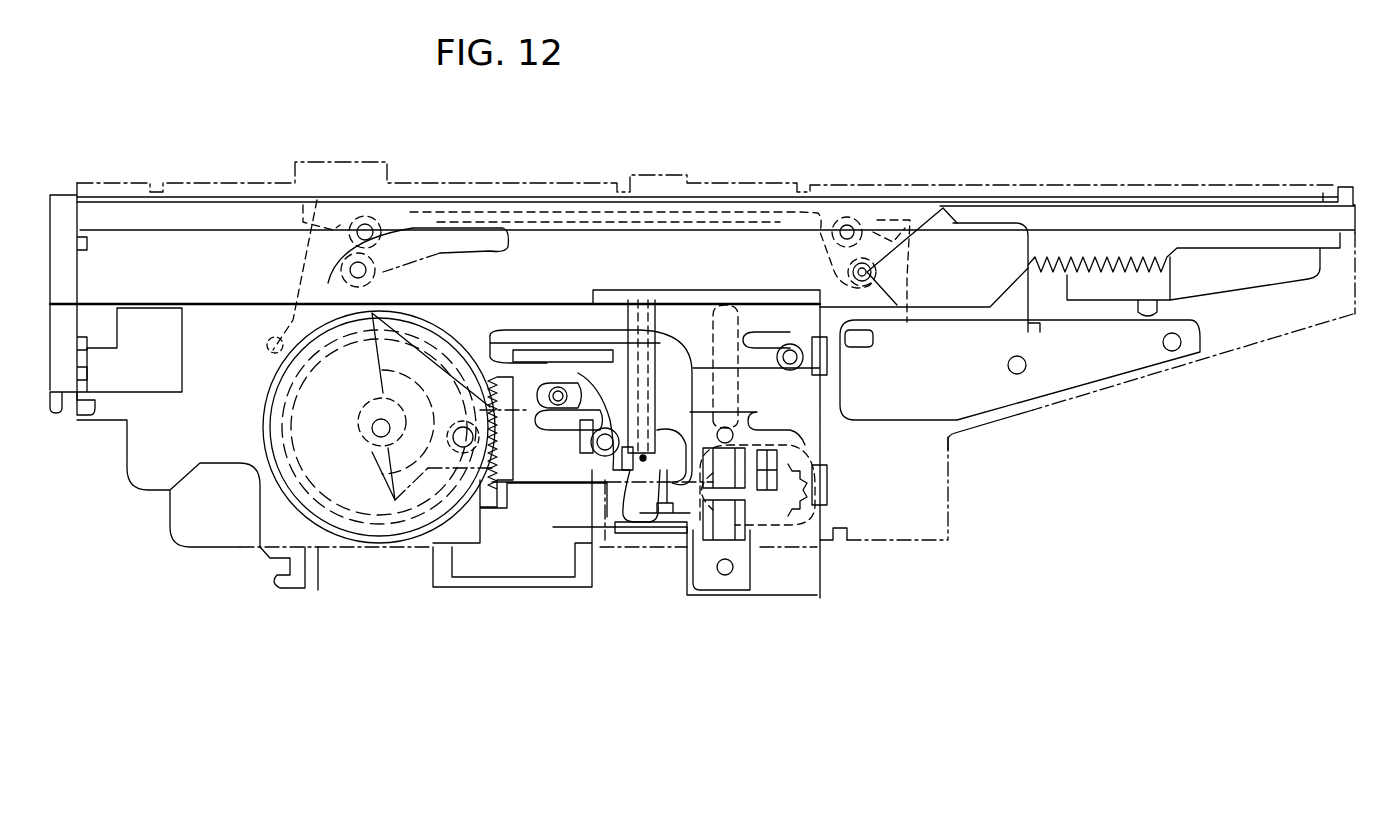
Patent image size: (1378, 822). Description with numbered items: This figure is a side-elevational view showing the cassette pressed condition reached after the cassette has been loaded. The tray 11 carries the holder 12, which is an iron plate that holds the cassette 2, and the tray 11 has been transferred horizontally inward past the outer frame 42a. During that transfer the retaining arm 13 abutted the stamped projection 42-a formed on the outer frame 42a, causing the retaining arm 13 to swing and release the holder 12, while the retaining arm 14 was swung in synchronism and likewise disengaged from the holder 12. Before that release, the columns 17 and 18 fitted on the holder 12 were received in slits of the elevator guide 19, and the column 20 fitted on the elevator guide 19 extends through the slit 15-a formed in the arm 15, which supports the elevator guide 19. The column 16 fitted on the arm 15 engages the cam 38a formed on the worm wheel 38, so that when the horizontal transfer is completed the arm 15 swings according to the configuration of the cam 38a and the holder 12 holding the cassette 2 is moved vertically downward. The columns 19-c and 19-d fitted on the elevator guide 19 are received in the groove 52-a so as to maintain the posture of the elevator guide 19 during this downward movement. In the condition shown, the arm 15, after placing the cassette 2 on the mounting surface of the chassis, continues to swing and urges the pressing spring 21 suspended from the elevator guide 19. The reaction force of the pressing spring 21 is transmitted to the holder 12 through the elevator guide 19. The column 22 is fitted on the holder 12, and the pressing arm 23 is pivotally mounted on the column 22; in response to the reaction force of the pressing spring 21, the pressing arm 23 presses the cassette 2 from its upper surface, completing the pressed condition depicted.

The tray 11 is at (1094, 188).
The retaining arm 14 is at (313, 267).
The stamped projection 42-a is at (933, 213).
The retaining arm 13 is at (910, 275).
The outer frame 42a is at (1152, 380).
The groove 52-a is at (730, 302).
The worm wheel 38 is at (303, 512).
The cam 38a is at (393, 525).
The column 16 is at (387, 460).
The column 17 is at (557, 390).
The cassette 2 is at (577, 330).
The holder 12 is at (596, 352).
The column 22 is at (660, 395).
The column 18 is at (790, 345).
The arm 15 is at (597, 440).
The column 20 is at (590, 452).
The slit 15-a is at (603, 522).
The pressing arm 23 is at (668, 520).
The elevator guide 19 is at (760, 565).
The column 19-c is at (732, 440).
The column 19-d is at (727, 577).
The pressing spring 21 is at (797, 537).